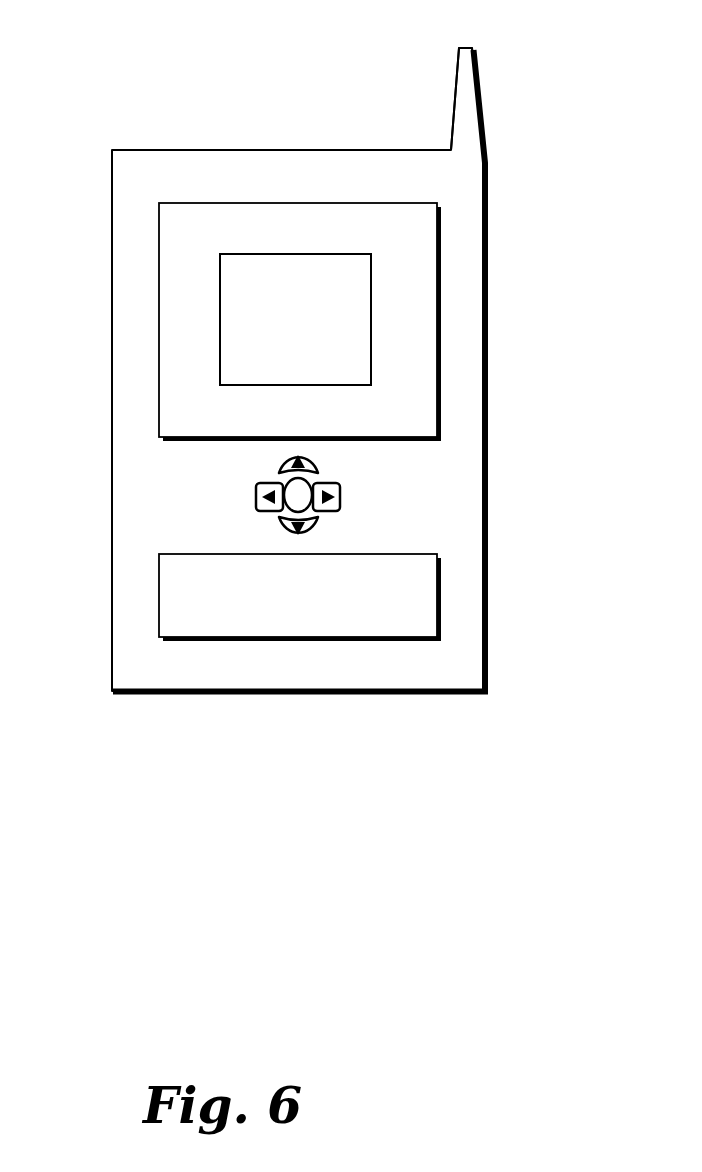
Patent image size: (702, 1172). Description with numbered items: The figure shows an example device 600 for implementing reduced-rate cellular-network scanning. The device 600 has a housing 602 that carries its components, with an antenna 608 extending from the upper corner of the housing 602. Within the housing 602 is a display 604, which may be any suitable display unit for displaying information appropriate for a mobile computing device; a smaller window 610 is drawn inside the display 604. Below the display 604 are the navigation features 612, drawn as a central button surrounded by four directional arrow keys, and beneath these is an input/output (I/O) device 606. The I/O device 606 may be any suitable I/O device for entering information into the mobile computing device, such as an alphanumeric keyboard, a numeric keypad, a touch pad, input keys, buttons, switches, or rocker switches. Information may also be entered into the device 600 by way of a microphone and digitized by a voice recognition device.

The device 600 is at (129, 68).
The housing 602 is at (487, 422).
The display 604 is at (439, 227).
The input/output (I/O) device 606 is at (443, 590).
The antenna 608 is at (453, 93).
The display window 610 is at (377, 338).
The navigation features 612 is at (346, 498).